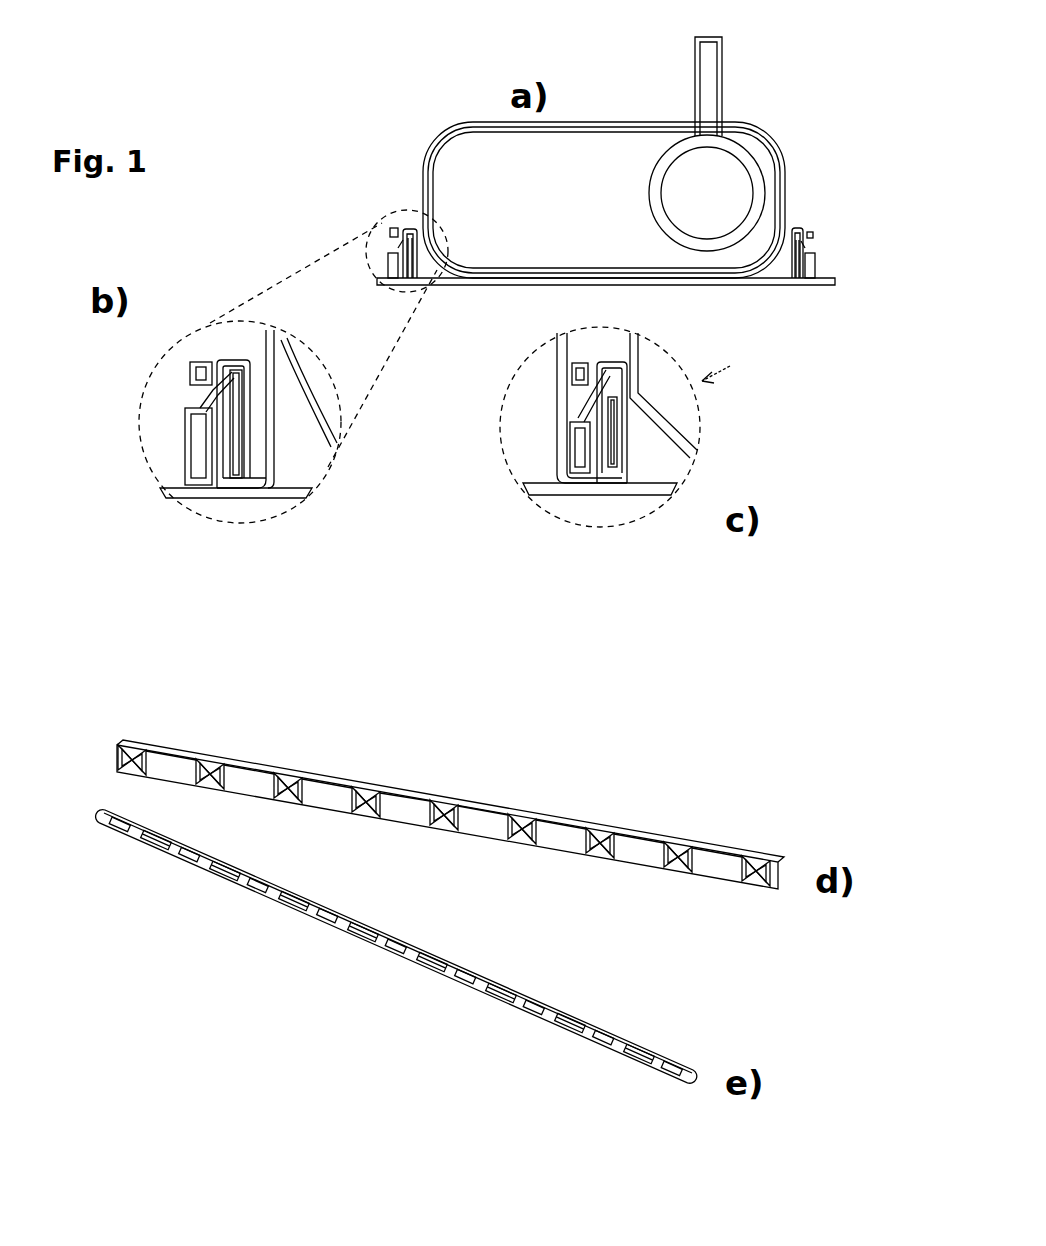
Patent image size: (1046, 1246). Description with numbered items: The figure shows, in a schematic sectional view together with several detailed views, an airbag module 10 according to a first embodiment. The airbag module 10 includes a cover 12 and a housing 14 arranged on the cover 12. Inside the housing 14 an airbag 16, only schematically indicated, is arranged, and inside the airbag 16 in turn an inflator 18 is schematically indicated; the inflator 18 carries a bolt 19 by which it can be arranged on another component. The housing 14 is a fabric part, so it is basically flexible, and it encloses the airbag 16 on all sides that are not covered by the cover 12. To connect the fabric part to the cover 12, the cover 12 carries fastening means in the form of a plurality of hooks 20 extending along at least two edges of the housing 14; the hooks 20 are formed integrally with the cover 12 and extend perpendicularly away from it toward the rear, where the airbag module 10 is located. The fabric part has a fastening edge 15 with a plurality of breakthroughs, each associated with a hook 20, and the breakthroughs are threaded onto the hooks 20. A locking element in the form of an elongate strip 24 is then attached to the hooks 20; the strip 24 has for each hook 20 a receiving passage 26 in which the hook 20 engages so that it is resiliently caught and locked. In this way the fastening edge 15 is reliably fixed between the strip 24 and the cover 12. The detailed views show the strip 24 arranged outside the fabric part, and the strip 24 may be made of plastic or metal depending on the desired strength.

The airbag module 10 is at (793, 125).
The cover 12 is at (779, 286).
The housing 14 is at (782, 224).
The fastening edge 15 is at (255, 488).
The airbag 16 is at (785, 224).
The inflator 18 is at (680, 172).
The bolt 19 is at (710, 100).
The hooks 20 is at (203, 398).
The strip 24 is at (618, 452).
The receiving passage 26 is at (247, 362).